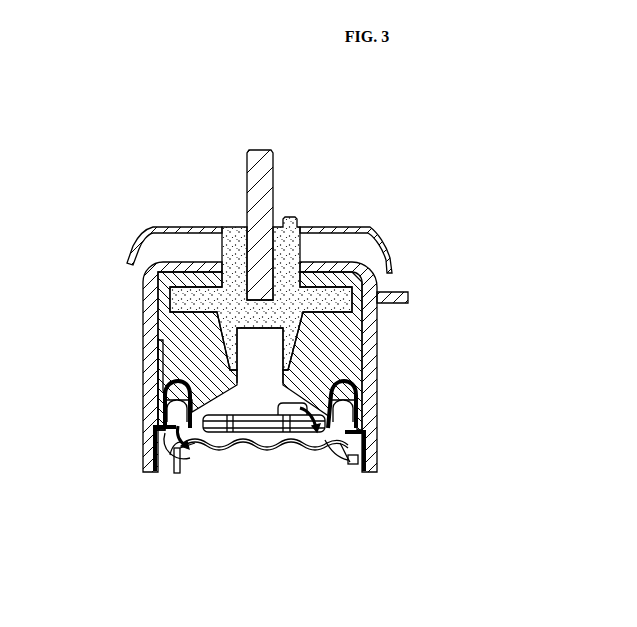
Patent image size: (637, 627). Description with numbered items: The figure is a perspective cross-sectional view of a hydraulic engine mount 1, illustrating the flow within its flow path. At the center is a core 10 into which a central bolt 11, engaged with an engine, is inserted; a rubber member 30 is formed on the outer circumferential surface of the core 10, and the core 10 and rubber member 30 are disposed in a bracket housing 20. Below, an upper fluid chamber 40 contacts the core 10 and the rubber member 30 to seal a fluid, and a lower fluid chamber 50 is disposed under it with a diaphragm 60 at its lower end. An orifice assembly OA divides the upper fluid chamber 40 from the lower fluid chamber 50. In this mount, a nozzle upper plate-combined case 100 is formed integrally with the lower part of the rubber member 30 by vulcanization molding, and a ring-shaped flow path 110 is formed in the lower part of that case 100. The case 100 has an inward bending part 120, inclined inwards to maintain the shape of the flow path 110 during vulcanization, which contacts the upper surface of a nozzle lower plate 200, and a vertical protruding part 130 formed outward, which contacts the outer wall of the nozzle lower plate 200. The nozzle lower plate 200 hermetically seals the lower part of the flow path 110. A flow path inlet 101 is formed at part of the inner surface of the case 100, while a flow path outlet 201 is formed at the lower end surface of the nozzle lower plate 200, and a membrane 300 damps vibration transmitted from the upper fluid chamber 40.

The engine mount 1 is at (338, 169).
The core 10 is at (330, 293).
The central bolt 11 is at (254, 192).
The bracket housing 20 is at (153, 302).
The rubber member 30 is at (200, 336).
The upper fluid chamber 40 is at (266, 399).
The lower fluid chamber 50 is at (305, 445).
The diaphragm 60 is at (281, 447).
The nozzle upper plate-combined case 100 is at (163, 407).
The flow path inlet 101 is at (288, 410).
The flow path 110 is at (275, 508).
The inward bending part 120 is at (170, 370).
The vertical protruding part 130 is at (153, 457).
The nozzle lower plate 200 is at (342, 460).
The flow path outlet 201 is at (184, 444).
The membrane 300 is at (315, 437).
The orifice assembly OA is at (367, 415).